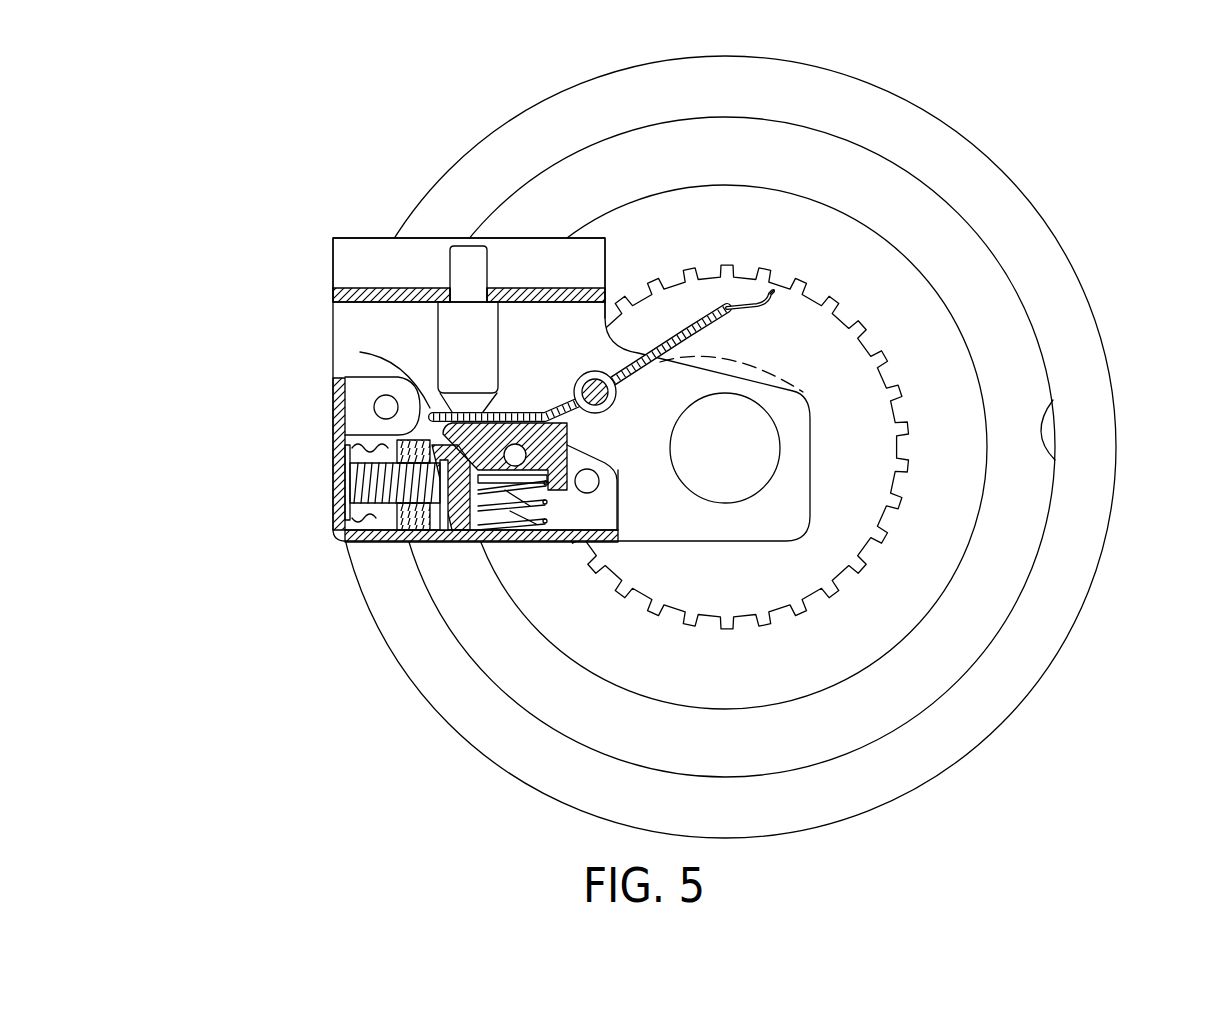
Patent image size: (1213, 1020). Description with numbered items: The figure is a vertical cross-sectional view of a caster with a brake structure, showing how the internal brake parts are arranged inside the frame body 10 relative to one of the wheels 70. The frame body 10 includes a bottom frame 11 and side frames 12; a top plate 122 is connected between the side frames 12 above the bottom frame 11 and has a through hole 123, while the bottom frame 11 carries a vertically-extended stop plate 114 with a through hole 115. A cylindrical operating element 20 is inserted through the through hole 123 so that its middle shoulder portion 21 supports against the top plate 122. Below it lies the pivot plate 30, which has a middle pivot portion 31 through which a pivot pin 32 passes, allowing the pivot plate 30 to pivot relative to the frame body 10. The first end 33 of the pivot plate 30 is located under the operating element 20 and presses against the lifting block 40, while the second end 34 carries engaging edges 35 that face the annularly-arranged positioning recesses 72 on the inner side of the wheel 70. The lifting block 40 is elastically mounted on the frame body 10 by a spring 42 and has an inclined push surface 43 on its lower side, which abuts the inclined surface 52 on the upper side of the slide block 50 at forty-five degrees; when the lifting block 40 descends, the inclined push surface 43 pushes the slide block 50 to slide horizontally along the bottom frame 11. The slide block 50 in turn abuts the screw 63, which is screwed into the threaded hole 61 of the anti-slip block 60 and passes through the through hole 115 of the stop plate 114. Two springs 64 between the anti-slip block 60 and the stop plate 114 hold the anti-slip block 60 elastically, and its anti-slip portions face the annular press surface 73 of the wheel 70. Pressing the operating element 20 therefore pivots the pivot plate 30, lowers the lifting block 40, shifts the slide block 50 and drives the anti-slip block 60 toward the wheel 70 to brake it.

The frame body 10 is at (315, 250).
The bottom frame 11 is at (340, 535).
The side frame 12 is at (370, 250).
The stop plate 114 is at (333, 425).
The through hole 115 is at (340, 460).
The top plate 122 is at (333, 293).
The through hole 123 is at (450, 290).
The operating element 20 is at (475, 262).
The shoulder portion 21 is at (387, 305).
The pivot plate 30 is at (553, 401).
The pivot portion 31 is at (613, 390).
The pivot pin 32 is at (606, 400).
The first end 33 is at (360, 352).
The second end 34 is at (732, 306).
The engaging edge 35 is at (771, 297).
The lifting block 40 is at (570, 437).
The spring 42 is at (545, 503).
The inclined push surface 43 is at (455, 533).
The slide block 50 is at (478, 535).
The inclined surface 52 is at (507, 413).
The anti-slip block 60 is at (393, 527).
The threaded hole 61 is at (408, 510).
The screw 63 is at (363, 515).
The spring 64 is at (345, 510).
The wheel 70 is at (1010, 157).
The positioning recess 72 is at (858, 320).
The annular press surface 73 is at (1055, 460).